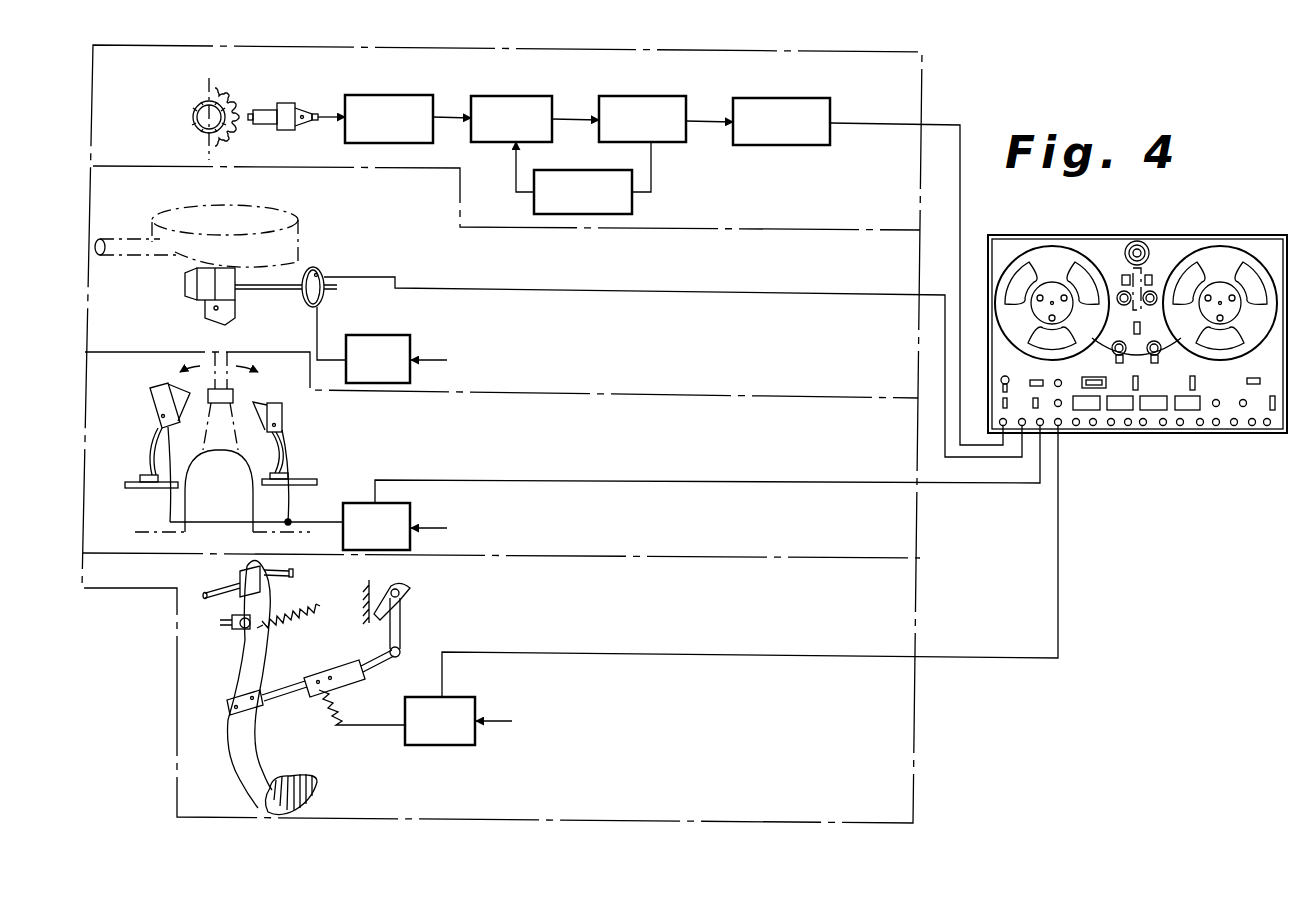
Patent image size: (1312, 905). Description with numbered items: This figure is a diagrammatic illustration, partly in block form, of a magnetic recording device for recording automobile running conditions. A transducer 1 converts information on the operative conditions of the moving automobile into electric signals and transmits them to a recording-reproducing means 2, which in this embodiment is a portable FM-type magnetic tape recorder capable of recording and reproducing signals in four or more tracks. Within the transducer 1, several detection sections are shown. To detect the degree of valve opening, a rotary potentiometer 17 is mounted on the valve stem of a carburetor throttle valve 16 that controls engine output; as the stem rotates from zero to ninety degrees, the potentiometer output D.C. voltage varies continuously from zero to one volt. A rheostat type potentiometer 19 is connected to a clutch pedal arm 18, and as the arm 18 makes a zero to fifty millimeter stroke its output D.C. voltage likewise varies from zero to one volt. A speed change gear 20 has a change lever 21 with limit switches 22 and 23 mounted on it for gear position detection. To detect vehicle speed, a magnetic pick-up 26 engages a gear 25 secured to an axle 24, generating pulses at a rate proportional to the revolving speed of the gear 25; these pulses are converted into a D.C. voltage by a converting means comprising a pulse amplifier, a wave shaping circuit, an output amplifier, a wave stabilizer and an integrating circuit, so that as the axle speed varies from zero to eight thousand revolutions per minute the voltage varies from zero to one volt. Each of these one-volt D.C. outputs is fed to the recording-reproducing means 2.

The transducer 1 is at (905, 64).
The recording-reproducing means 2 is at (1230, 241).
The carburetor throttle valve 16 is at (232, 290).
The rotary potentiometer 17 is at (318, 268).
The clutch pedal arm 18 is at (243, 676).
The rheostat type potentiometer 19 is at (338, 675).
The speed change gear 20 is at (243, 506).
The change lever 21 is at (233, 395).
The limit switch 22 is at (162, 417).
The limit switch 23 is at (283, 414).
The axle 24 is at (193, 119).
The gear 25 is at (240, 124).
The magnetic pick-up 26 is at (285, 104).